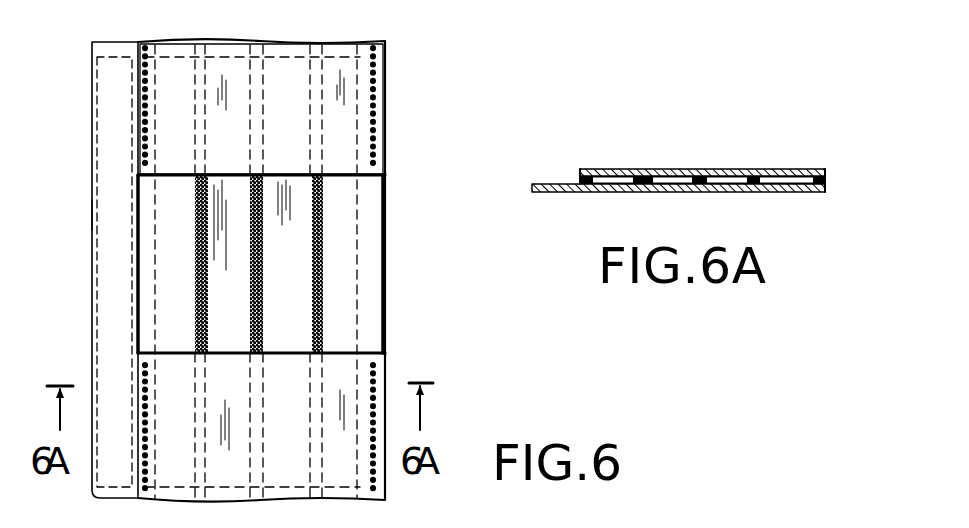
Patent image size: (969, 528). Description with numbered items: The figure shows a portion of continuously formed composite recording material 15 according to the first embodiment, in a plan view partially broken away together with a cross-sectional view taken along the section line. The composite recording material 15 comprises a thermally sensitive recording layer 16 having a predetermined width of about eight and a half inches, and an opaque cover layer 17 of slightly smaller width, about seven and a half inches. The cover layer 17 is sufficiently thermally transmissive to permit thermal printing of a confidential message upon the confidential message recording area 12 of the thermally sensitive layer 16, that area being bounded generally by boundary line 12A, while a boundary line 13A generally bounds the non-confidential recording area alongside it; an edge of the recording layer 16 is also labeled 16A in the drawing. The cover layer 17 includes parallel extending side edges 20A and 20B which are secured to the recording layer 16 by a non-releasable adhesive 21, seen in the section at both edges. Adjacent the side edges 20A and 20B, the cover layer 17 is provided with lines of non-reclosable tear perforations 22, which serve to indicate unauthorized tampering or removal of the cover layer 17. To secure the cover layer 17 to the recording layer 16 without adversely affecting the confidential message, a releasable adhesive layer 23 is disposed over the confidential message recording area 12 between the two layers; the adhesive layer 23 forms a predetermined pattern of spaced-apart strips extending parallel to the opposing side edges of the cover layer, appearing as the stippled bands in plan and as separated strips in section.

In FIG. 6, the confidential message recording area 12 is at (348, 200).
In FIG. 6, the boundary line 12A is at (385, 121).
In FIG. 6, the boundary line 13A is at (100, 73).
In FIG. 6, the continuously formed composite recording material 15 is at (430, 303).
In FIG. 6A, the continuously formed composite recording material 15 is at (786, 216).
In FIG. 6, the thermally sensitive recording layer 16 is at (92, 178).
In FIG. 6A, the thermally sensitive recording layer 16 is at (633, 192).
In FIG. 6, the edge of base sheet 16A is at (97, 212).
In FIG. 6, the opaque cover layer 17 is at (142, 75).
In FIG. 6A, the opaque cover layer 17 is at (663, 169).
In FIG. 6, the side edge 20A is at (135, 118).
In FIG. 6A, the side edge 20A is at (580, 170).
In FIG. 6, the side edge 20B is at (385, 94).
In FIG. 6A, the side edge 20B is at (825, 170).
In FIG. 6, the non-releasable adhesive 21 is at (138, 246).
In FIG. 6A, the non-releasable adhesive 21 is at (598, 169).
In FIG. 6, the lines of non-reclosable tear perforations 22 is at (145, 378).
In FIG. 6A, the lines of non-reclosable tear perforations 22 is at (603, 172).
In FIG. 6, the releasable adhesive layer 23 is at (253, 289).
In FIG. 6A, the releasable adhesive layer 23 is at (757, 177).